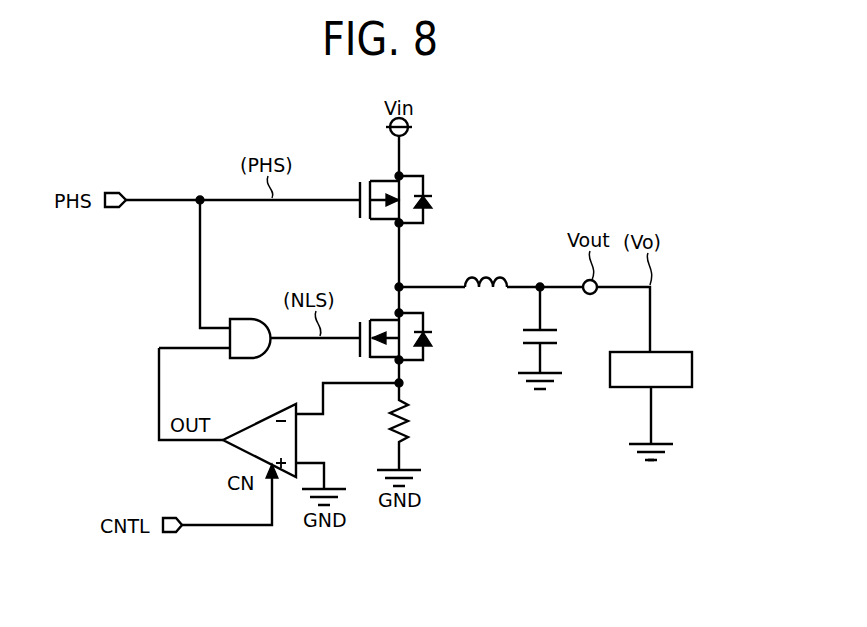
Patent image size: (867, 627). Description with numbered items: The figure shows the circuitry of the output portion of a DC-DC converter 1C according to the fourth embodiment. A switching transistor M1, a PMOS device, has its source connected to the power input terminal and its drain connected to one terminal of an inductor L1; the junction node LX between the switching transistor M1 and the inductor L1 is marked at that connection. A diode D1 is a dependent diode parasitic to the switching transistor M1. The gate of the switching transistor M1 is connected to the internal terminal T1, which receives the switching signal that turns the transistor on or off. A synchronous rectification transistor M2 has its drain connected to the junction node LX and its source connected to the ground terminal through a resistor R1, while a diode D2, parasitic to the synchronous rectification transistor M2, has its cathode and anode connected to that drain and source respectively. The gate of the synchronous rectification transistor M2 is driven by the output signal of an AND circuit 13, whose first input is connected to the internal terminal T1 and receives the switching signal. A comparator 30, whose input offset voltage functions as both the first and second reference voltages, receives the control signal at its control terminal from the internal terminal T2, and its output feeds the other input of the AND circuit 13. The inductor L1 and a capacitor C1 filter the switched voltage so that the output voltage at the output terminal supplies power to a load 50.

The internal terminal T1 is at (113, 192).
The internal terminal T2 is at (172, 516).
The AND circuit 13 is at (248, 318).
The comparator 30 is at (248, 424).
The load 50 is at (684, 352).
The DC-DC converter 1C is at (611, 552).
The switching transistor M1 is at (376, 233).
The synchronous rectification transistor M2 is at (376, 337).
The diode D1 is at (432, 199).
The diode D2 is at (432, 336).
The inductor L1 is at (486, 267).
The capacitor C1 is at (526, 338).
The resistor R1 is at (409, 434).
The junction node LX is at (403, 285).